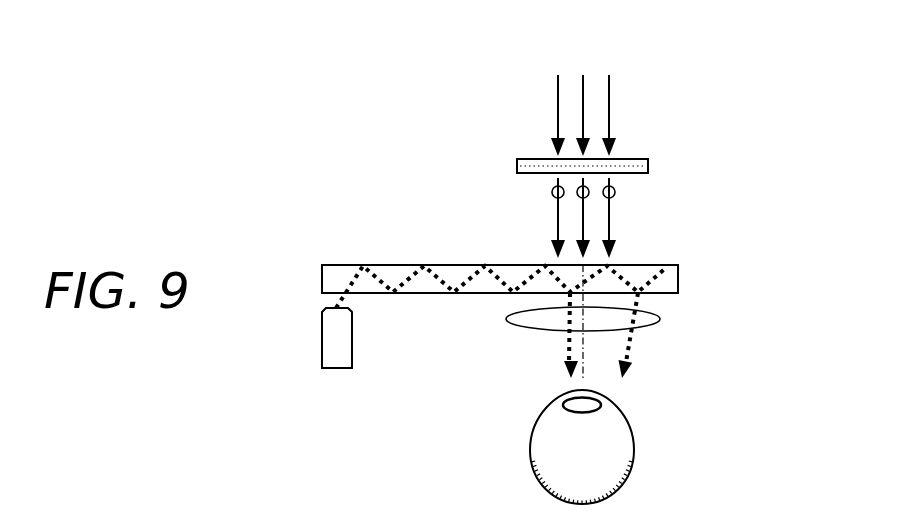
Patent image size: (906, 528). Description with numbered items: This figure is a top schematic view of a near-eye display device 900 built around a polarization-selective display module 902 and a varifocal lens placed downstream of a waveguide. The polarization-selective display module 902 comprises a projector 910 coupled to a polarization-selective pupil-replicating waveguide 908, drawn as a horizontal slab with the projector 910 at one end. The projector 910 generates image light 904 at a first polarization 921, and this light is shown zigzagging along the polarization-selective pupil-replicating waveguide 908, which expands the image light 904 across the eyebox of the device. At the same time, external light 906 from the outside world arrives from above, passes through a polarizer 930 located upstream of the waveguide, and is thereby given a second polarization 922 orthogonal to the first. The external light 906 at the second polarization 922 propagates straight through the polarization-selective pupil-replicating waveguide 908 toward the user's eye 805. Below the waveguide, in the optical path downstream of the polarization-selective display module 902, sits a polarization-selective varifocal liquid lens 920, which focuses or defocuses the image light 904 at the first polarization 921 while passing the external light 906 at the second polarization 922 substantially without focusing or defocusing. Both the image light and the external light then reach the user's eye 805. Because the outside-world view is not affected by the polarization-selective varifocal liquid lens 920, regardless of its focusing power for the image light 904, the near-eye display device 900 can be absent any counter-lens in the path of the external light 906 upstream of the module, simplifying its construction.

The near-eye display device 900 is at (410, 79).
The polarization-selective display module 902 is at (319, 232).
The image light 904 is at (416, 295).
The external light 906 is at (585, 106).
The polarization-selective pupil-replicating waveguide 908 is at (668, 277).
The projector 910 is at (334, 360).
The polarization-selective varifocal liquid lens 920 is at (660, 323).
The first polarization 921 is at (383, 282).
The second polarization 922 is at (615, 194).
The polarizer 930 is at (648, 166).
The user's eye 805 is at (613, 465).